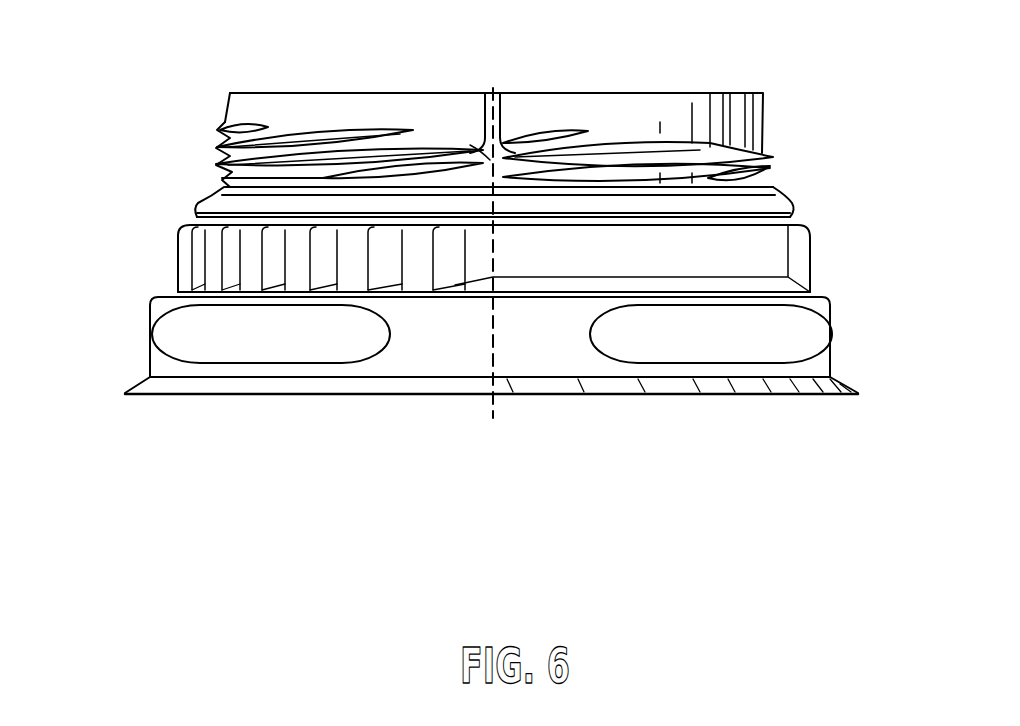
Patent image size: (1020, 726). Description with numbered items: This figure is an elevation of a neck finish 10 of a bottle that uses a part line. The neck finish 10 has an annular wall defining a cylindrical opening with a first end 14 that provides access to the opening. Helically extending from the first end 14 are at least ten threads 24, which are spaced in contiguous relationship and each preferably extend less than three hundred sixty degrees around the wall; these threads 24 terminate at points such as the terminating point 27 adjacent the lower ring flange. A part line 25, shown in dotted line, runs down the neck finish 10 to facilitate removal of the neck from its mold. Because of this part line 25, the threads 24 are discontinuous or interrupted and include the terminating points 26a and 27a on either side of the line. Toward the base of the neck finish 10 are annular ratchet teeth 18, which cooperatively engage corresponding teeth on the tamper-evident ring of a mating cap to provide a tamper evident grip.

The neck finish 10 is at (192, 147).
The first end 14 is at (718, 90).
The annular ratchet teeth 18 is at (173, 254).
The threads 24 is at (705, 178).
The part line 25 is at (497, 88).
The terminating point 26a is at (490, 97).
The terminating point 27 is at (248, 177).
The terminating point 27a is at (483, 150).